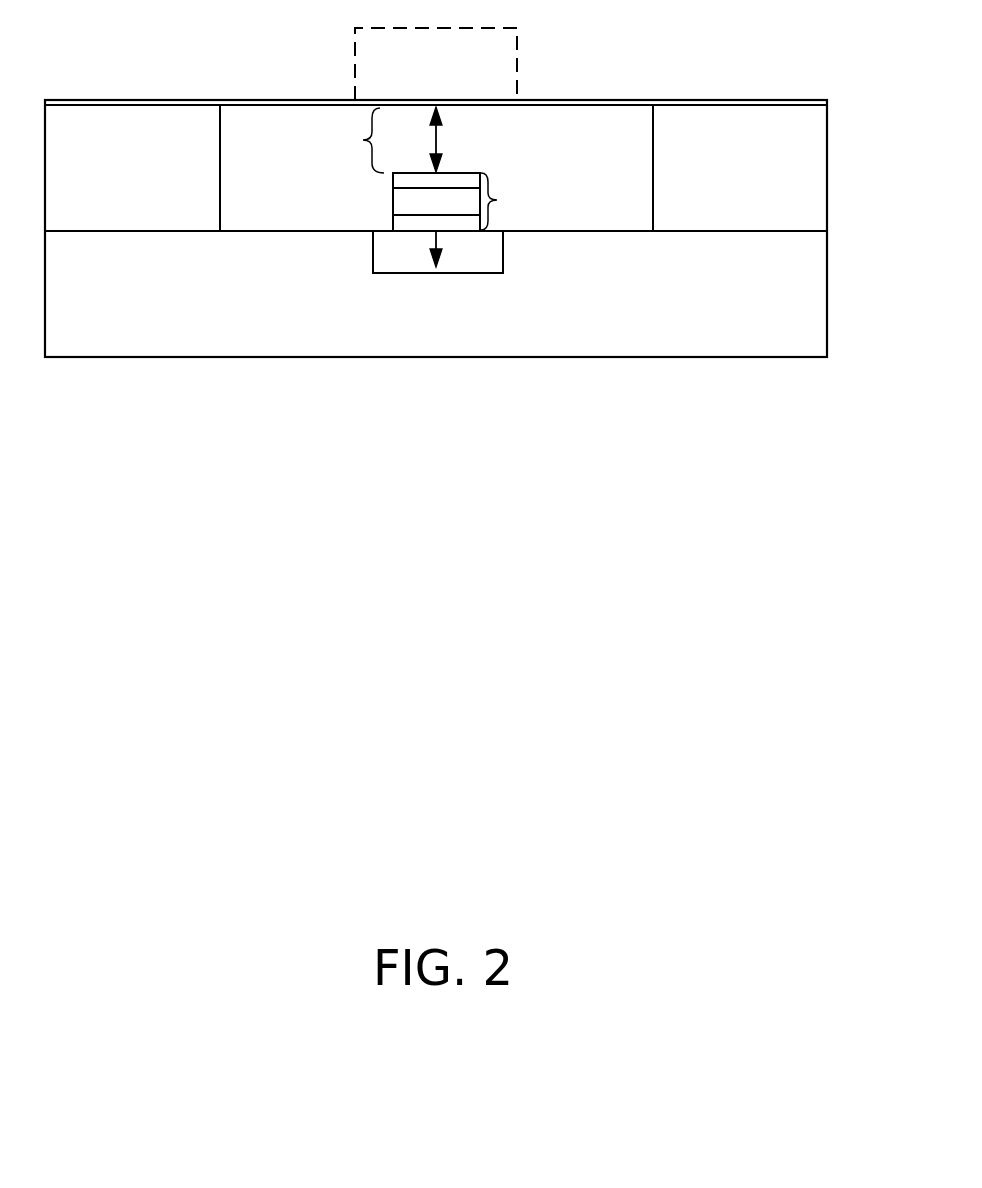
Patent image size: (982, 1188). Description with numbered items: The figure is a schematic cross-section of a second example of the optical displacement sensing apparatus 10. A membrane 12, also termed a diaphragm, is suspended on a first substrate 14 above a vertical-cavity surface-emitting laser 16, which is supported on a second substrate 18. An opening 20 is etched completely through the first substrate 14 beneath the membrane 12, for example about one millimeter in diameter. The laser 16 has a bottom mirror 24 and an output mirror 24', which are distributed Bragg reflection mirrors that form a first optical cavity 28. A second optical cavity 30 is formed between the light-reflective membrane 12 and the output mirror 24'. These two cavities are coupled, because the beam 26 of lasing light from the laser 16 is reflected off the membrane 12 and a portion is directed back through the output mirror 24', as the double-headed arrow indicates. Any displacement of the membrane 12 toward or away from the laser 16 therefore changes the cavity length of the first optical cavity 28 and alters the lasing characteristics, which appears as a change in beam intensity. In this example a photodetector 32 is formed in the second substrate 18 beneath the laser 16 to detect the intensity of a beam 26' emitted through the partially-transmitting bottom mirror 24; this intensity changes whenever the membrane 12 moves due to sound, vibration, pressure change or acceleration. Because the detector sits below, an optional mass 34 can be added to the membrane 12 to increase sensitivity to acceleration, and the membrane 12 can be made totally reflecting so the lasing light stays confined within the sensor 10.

The optical displacement sensing apparatus 10 is at (787, 385).
The membrane 12 is at (305, 101).
The first substrate 14 is at (143, 186).
The vertical-cavity surface-emitting laser (VCSEL) 16 is at (472, 168).
The second substrate 18 is at (143, 312).
The opening 20 is at (220, 138).
The bottom mirror 24 is at (401, 218).
The output mirror 24' is at (401, 178).
The beam 26 is at (412, 139).
The beam 26' is at (462, 249).
The first optical cavity 28 is at (512, 201).
The second optical cavity 30 is at (353, 140).
The photodetector 32 is at (373, 257).
The mass 34 is at (448, 90).